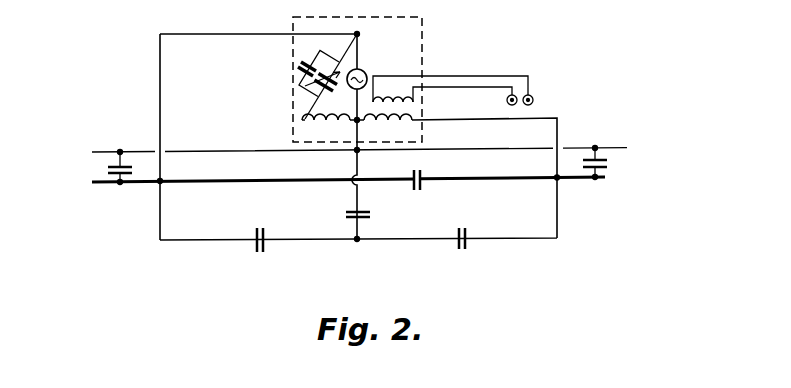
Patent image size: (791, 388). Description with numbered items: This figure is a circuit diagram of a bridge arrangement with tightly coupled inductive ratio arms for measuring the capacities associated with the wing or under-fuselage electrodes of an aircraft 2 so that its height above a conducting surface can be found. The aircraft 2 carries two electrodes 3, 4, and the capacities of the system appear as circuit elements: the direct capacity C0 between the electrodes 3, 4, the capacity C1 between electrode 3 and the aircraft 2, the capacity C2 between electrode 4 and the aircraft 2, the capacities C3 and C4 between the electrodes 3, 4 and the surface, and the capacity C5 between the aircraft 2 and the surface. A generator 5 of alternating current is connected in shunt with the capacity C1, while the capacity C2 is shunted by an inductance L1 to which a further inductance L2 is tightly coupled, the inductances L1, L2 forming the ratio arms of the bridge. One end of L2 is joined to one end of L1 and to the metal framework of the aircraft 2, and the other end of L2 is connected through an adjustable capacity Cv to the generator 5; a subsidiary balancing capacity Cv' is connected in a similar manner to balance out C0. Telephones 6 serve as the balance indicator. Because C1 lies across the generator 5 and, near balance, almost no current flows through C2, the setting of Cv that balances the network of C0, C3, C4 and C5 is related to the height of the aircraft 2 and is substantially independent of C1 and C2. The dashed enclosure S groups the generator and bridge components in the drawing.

The enclosure / shielded oscillator unit S is at (427, 43).
The generator of alternating current 5 is at (368, 73).
The telephones 6 is at (534, 96).
The inductance L1 is at (382, 112).
The further inductance L2 is at (302, 137).
The adjustable capacity Cv is at (289, 83).
The subsidiary balancing capacity Cv' is at (296, 71).
The capacity between electrode 3 and the aircraft C1 is at (98, 173).
The capacity between electrode 4 and the aircraft C2 is at (612, 168).
The capacity between electrode 3 and the surface C3 is at (255, 262).
The capacity between electrode 4 and the surface C4 is at (470, 250).
The capacity between aircraft and the surface C5 is at (345, 212).
The direct capacity between electrodes C0 is at (425, 185).
The aircraft 2 is at (600, 145).
The electrode 3 is at (135, 188).
The electrode 4 is at (585, 181).